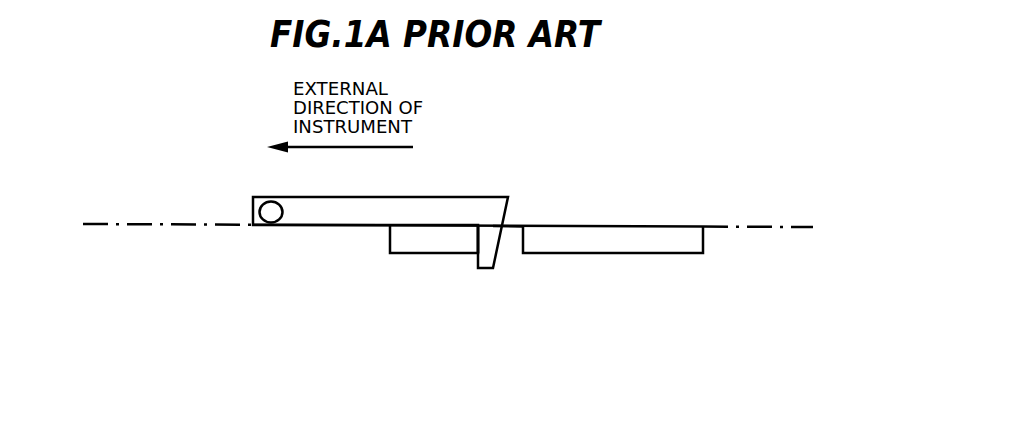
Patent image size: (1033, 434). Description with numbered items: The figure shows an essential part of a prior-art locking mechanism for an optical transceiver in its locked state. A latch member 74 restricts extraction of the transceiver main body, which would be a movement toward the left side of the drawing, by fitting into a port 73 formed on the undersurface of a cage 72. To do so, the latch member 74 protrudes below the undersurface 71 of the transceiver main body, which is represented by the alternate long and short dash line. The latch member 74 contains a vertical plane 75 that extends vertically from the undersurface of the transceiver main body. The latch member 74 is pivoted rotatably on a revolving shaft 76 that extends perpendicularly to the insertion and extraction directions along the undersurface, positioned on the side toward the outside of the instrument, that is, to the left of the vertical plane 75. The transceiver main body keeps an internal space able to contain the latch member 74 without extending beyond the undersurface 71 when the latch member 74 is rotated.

The undersurface of transceiver main body 71 is at (112, 226).
The cage 72 is at (433, 253).
The port 73 is at (509, 262).
The latch member 74 is at (480, 196).
The vertical plane 75 is at (467, 253).
The revolving shaft 76 is at (271, 223).